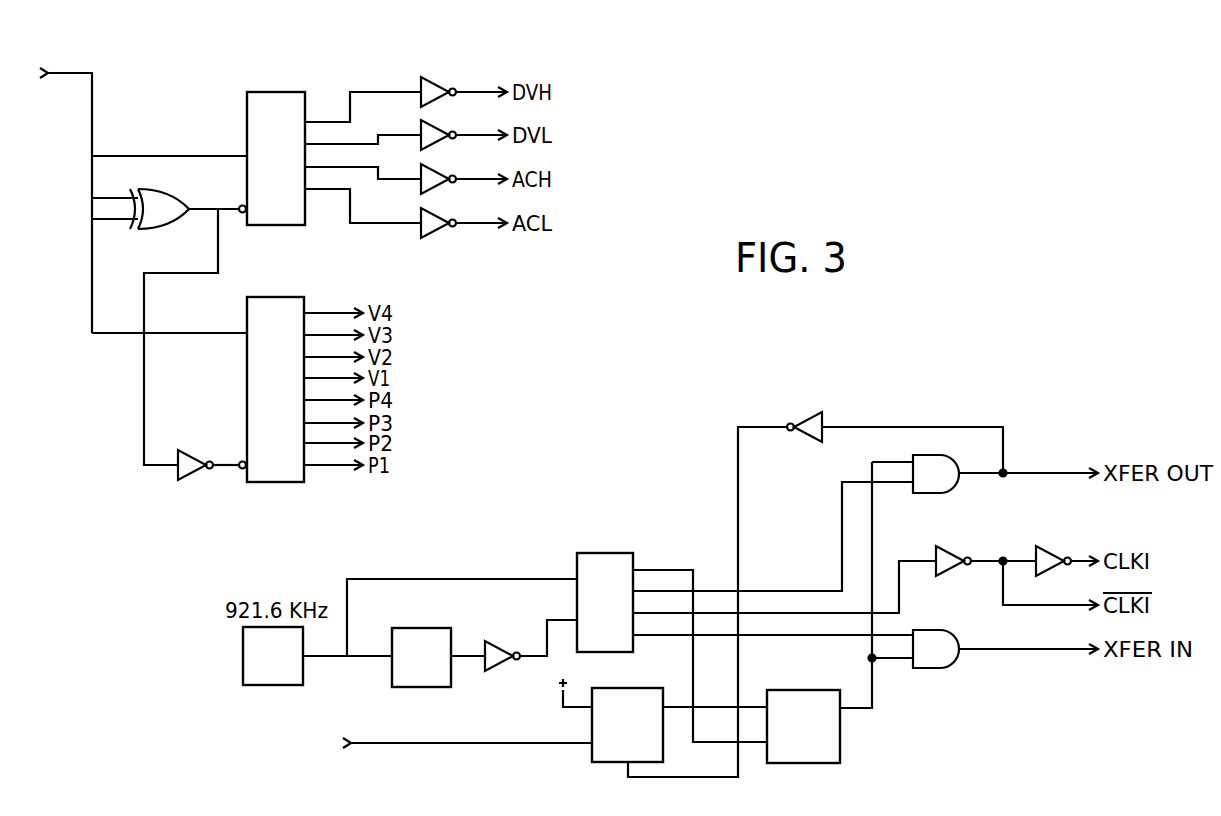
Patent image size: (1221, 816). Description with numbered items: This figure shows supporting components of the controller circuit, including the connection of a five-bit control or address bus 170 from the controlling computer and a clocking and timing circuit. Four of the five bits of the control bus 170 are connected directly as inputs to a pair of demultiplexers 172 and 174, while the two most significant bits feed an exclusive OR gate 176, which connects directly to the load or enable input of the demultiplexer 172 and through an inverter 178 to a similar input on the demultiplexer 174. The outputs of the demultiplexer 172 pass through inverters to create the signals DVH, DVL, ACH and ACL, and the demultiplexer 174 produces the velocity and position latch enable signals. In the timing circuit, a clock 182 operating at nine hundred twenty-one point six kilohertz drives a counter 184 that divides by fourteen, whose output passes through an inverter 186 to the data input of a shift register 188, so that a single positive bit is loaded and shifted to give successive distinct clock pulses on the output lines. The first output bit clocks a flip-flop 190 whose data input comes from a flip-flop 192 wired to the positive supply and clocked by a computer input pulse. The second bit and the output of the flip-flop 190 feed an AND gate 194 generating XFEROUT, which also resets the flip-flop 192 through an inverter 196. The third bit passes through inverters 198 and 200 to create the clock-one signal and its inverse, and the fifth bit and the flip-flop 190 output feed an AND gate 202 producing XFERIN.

The control bus 170 is at (70, 71).
The demultiplexer 172 is at (291, 168).
The demultiplexer 174 is at (290, 398).
The exclusive OR gate 176 is at (178, 219).
The inverter 178 is at (188, 455).
The clock 182 is at (287, 666).
The counter 184 is at (436, 667).
The inverter 186 is at (496, 644).
The shift register 188 is at (619, 611).
The flip-flop 190 is at (819, 738).
The flip-flop 192 is at (642, 738).
The AND gate 194 is at (946, 484).
The inverter 196 is at (812, 412).
The inverter 198 is at (947, 549).
The inverter 200 is at (1044, 549).
The AND gate 202 is at (947, 660).